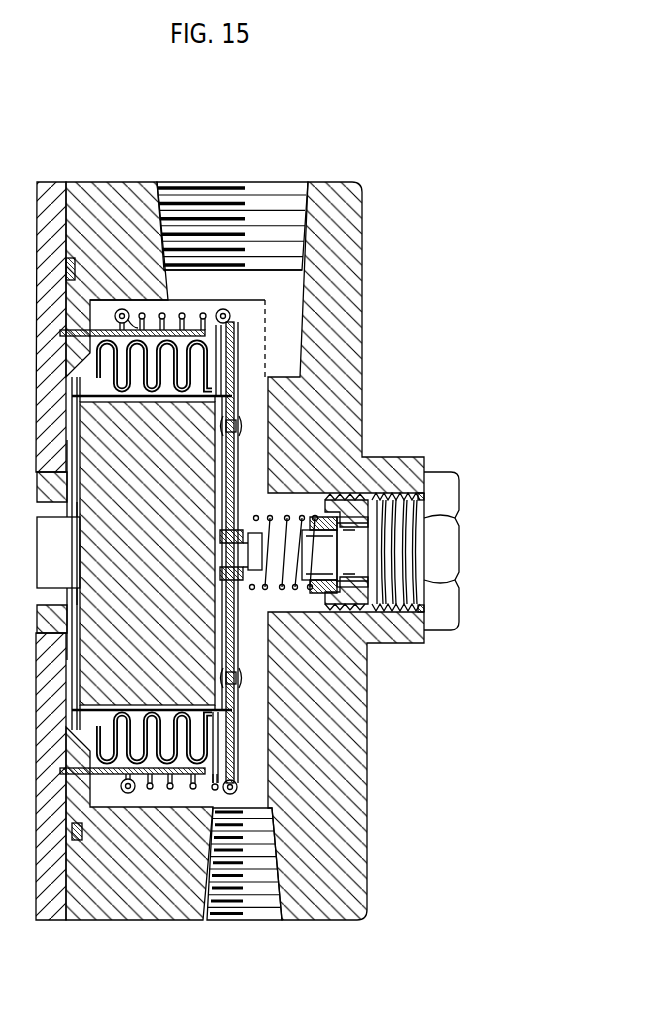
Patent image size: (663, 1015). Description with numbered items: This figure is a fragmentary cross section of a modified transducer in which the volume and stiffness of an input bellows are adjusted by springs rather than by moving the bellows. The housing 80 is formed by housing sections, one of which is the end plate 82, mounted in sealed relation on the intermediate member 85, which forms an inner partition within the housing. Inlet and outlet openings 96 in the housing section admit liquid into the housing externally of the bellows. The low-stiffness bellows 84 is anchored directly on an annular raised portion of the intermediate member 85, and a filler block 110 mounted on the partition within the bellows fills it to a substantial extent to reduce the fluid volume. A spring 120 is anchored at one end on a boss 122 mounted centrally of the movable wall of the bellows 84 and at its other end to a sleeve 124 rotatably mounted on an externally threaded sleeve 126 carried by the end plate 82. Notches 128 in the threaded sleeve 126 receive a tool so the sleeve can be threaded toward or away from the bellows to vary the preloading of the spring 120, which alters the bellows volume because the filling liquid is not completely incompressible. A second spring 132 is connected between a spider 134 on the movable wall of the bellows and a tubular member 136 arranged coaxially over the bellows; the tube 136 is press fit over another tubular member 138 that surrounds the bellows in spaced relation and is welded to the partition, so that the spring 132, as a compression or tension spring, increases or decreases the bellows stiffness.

The housing 80 is at (121, 182).
The housing section 82 is at (362, 204).
The bellows 84 is at (108, 389).
The intermediate member 85 is at (57, 182).
The inlet and outlet openings 96 is at (263, 182).
The filler block 110 is at (165, 512).
The spring 120 is at (270, 524).
The boss 122 is at (257, 518).
The sleeve 124 is at (323, 584).
The externally threaded sleeve 126 is at (382, 640).
The notches 128 is at (368, 552).
The spring 132 is at (143, 312).
The spider 134 is at (238, 335).
The tubular member 136 is at (184, 313).
The tubular member 138 is at (108, 330).